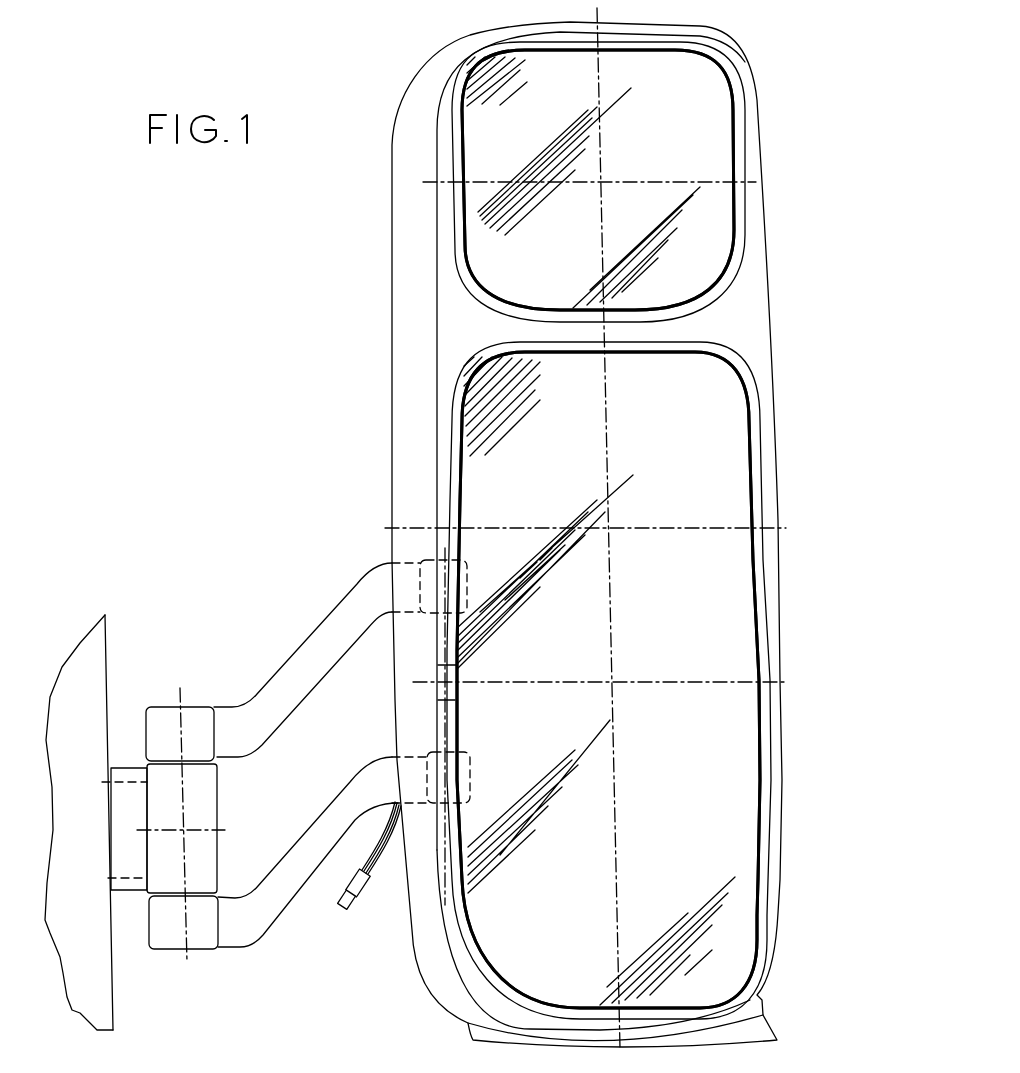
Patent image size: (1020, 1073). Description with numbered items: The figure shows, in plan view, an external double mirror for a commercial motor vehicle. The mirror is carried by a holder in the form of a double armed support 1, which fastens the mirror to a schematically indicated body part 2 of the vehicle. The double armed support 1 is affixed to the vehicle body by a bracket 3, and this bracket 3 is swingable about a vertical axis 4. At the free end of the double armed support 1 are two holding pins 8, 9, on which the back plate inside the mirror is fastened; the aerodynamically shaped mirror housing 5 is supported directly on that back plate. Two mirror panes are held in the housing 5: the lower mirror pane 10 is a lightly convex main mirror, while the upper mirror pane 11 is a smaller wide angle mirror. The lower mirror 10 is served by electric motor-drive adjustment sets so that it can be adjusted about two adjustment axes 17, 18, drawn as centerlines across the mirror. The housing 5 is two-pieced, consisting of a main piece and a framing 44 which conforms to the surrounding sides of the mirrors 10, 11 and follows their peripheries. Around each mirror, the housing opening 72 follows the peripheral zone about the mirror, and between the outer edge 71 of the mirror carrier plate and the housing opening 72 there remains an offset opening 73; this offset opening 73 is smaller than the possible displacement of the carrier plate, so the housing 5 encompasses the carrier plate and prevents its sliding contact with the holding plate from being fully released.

The double armed support 1 is at (292, 646).
The body part 2 is at (90, 665).
The bracket 3 is at (203, 803).
The vertical axis 4 is at (186, 934).
The mirror housing 5 is at (384, 331).
The holding pin 8 is at (437, 633).
The holding pin 9 is at (445, 727).
The lower mirror pane 10 is at (707, 579).
The upper mirror pane 11 is at (706, 202).
The adjustment axis 17 is at (617, 838).
The adjustment axis 18 is at (692, 682).
The framing 44 is at (740, 325).
The outer edge 71 is at (735, 107).
The housing opening 72 is at (705, 55).
The offset opening 73 is at (740, 149).